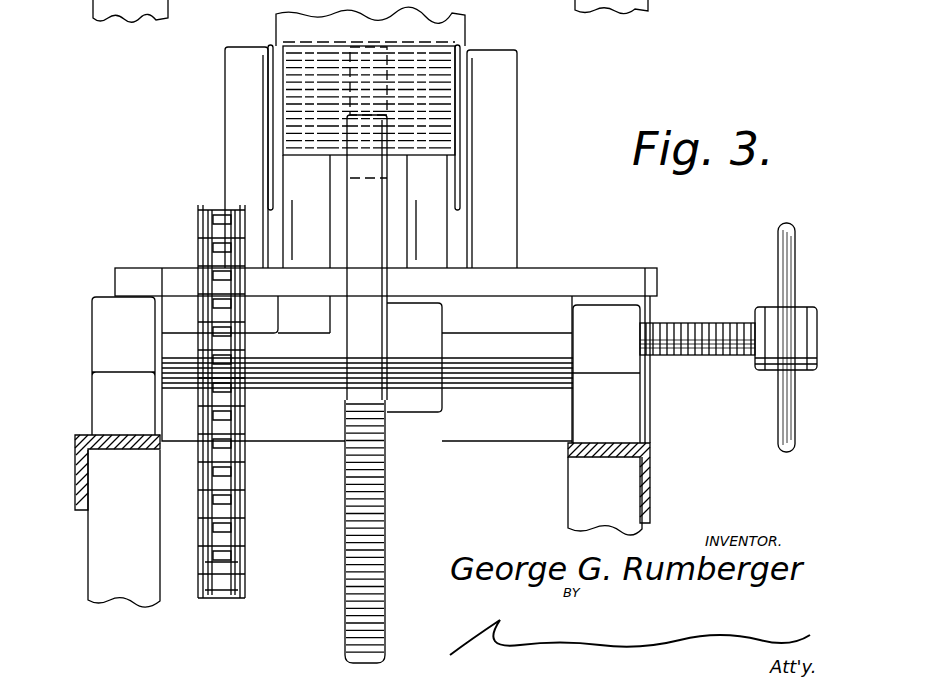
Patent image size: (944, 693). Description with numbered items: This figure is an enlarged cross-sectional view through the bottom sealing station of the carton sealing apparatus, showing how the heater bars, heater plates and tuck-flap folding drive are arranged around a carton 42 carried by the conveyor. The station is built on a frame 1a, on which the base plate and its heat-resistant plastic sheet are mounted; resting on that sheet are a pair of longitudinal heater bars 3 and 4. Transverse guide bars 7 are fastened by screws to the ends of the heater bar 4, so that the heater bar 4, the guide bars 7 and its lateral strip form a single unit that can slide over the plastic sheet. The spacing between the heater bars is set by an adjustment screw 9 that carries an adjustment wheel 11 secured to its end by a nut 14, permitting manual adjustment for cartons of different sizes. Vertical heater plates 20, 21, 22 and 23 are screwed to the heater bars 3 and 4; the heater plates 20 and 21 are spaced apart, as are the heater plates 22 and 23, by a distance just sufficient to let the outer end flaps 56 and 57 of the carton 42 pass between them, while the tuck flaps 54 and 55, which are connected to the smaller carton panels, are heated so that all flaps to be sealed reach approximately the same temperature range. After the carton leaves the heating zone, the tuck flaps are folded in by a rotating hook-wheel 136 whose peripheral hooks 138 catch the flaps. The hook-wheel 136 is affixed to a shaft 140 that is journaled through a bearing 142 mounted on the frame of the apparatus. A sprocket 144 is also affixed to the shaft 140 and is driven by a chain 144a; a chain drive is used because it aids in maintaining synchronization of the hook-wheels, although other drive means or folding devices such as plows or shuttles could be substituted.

The frame 1a is at (652, 462).
The longitudinal heater bar 3 is at (502, 326).
The longitudinal heater bar 4 is at (303, 324).
The transverse guide bars 7 is at (567, 282).
The adjustment screw 9 is at (718, 346).
The adjustment wheel 11 is at (796, 258).
The nut 14 is at (806, 372).
The vertical heater plate 20 is at (505, 136).
The vertical heater plate 21 is at (436, 236).
The vertical heater plate 22 is at (318, 236).
The vertical heater plate 23 is at (230, 100).
The carton 42 is at (450, 29).
The tuck flap 54 is at (432, 102).
The tuck flap 55 is at (318, 34).
The outer end flap 56 is at (462, 196).
The outer end flap 57 is at (270, 172).
The hook-wheel 136 is at (386, 505).
The peripheral hook 138 is at (372, 158).
The shaft 140 is at (518, 356).
The bearing 142 is at (100, 403).
The sprocket 144 is at (215, 207).
The chain 144a is at (240, 580).